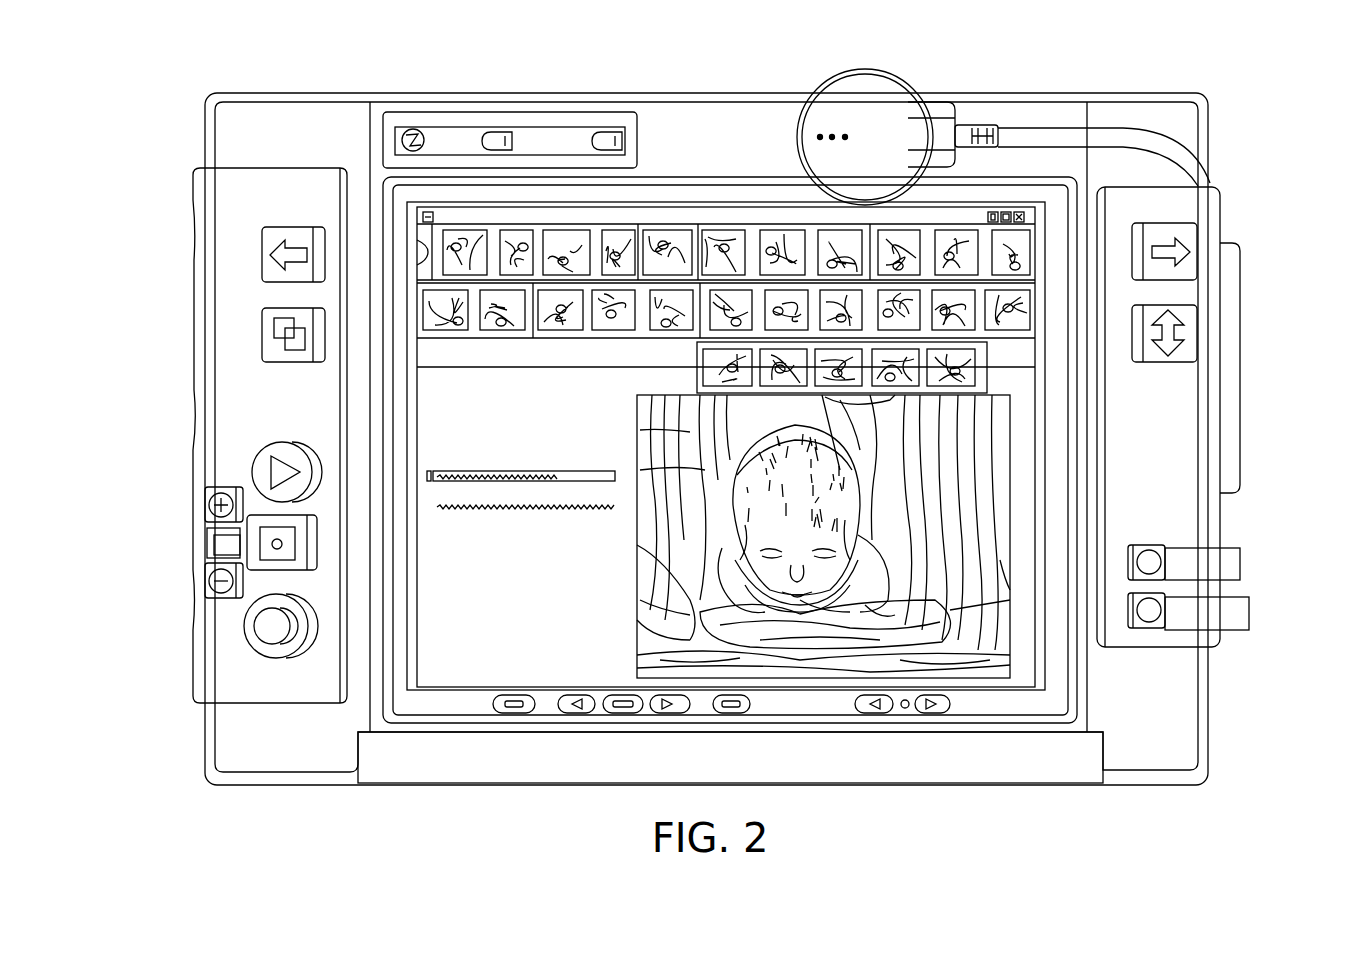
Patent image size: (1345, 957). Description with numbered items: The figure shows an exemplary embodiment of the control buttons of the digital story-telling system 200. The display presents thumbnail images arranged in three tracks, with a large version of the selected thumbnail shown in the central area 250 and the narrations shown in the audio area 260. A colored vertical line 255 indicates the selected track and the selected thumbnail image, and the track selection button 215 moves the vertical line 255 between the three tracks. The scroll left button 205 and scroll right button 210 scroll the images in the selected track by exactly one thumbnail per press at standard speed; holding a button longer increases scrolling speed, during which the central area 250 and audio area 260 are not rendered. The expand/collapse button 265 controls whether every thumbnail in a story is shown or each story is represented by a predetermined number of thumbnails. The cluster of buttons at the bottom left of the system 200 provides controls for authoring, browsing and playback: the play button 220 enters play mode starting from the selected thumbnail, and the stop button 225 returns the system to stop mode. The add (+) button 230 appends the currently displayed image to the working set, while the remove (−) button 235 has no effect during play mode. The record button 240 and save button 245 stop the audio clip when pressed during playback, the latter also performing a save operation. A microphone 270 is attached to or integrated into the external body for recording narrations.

The system 200 is at (1145, 755).
The scroll left button 205 is at (262, 253).
The scroll right button 210 is at (1207, 212).
The track selection button 215 is at (1232, 312).
The play button 220 is at (255, 472).
The stop button 225 is at (225, 545).
The add (+) button 230 is at (205, 506).
The remove (−) button 235 is at (208, 584).
The record button 240 is at (280, 565).
The save button 245 is at (1148, 560).
The central area 250 is at (975, 655).
The vertical line 255 is at (725, 392).
The audio area 260 is at (473, 628).
The expand/collapse button 265 is at (262, 326).
The microphone 270 is at (872, 90).